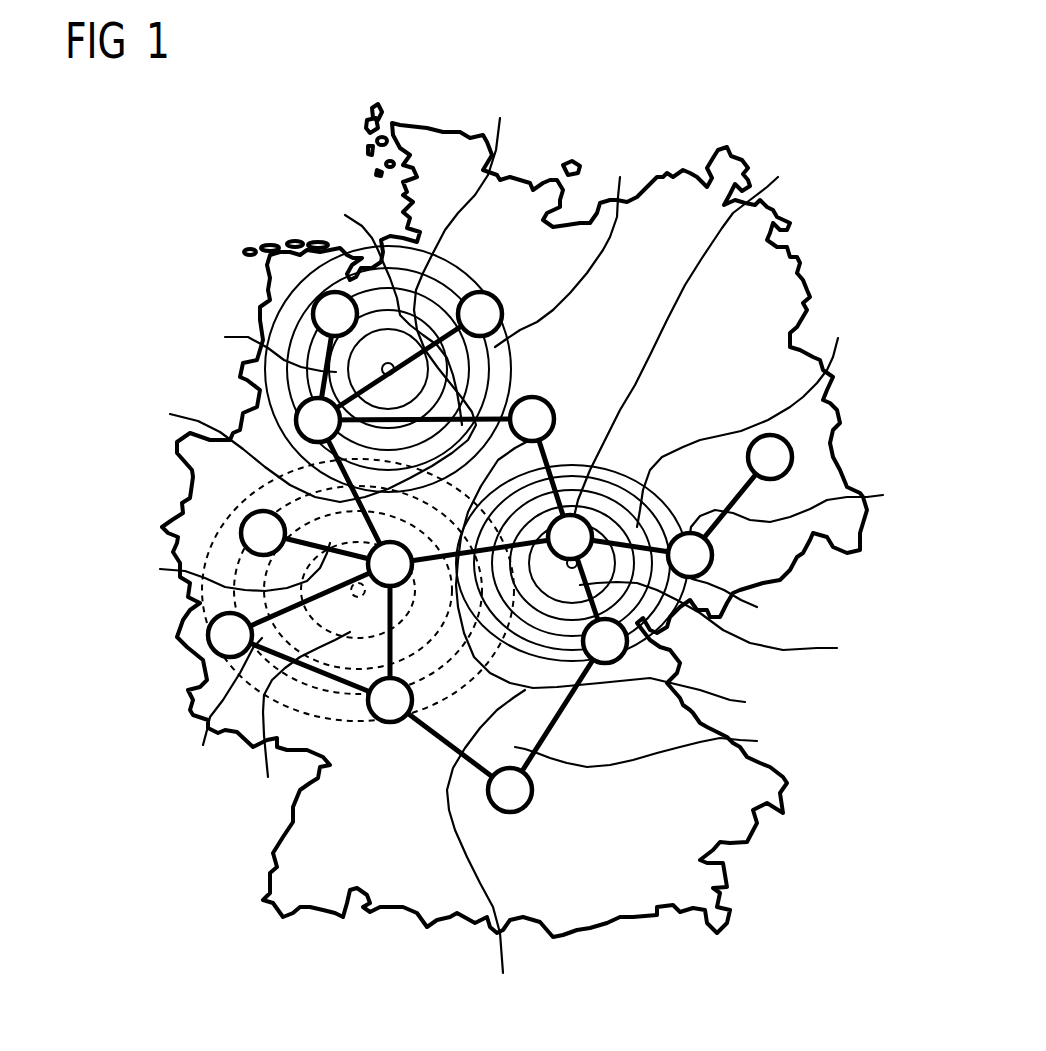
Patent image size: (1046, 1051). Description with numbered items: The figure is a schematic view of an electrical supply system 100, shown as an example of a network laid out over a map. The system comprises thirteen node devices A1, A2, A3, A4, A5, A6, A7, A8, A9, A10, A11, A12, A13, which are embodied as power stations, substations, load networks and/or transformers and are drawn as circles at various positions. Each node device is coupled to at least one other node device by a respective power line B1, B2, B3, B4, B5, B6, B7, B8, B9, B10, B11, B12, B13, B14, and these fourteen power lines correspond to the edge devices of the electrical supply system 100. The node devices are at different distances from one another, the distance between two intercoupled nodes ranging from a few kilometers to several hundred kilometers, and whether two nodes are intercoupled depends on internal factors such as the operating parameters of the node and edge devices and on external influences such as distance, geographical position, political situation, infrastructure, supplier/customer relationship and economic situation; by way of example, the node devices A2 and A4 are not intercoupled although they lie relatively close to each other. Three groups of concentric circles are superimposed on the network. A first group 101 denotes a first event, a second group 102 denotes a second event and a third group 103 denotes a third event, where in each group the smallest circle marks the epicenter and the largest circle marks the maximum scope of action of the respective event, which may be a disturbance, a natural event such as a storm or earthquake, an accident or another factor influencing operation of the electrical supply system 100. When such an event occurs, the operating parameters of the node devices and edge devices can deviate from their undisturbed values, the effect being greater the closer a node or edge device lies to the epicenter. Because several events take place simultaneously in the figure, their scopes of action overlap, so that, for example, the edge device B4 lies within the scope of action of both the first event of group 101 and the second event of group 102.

The electrical supply system 100 is at (219, 143).
The first group of concentric circles 101 is at (432, 287).
The second group of concentric circles 102 is at (514, 520).
The third group of concentric circles 103 is at (750, 409).
The node device A1 is at (278, 299).
The node device A2 is at (504, 220).
The node device A3 is at (261, 404).
The node device A4 is at (604, 268).
The node device A5 is at (201, 513).
The node device A6 is at (389, 832).
The node device A7 is at (664, 377).
The node device A8 is at (760, 568).
The node device A9 is at (821, 452).
The node device A10 is at (176, 626).
The node device A11 is at (404, 764).
The node device A12 is at (541, 895).
The node device A13 is at (666, 644).
The power line B1 is at (265, 344).
The power line B2 is at (387, 307).
The power line B3 is at (564, 236).
The power line B4 is at (236, 447).
The power line B5 is at (691, 341).
The power line B6 is at (224, 567).
The power line B7 is at (224, 712).
The power line B8 is at (613, 569).
The power line B9 is at (742, 606).
The power line B10 is at (807, 504).
The power line B11 is at (732, 625).
The power line B12 is at (299, 725).
The power line B13 is at (486, 856).
The power line B14 is at (657, 744).